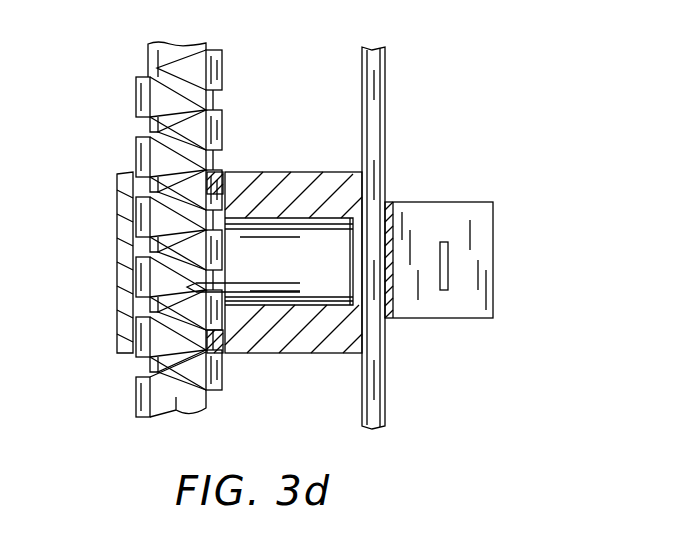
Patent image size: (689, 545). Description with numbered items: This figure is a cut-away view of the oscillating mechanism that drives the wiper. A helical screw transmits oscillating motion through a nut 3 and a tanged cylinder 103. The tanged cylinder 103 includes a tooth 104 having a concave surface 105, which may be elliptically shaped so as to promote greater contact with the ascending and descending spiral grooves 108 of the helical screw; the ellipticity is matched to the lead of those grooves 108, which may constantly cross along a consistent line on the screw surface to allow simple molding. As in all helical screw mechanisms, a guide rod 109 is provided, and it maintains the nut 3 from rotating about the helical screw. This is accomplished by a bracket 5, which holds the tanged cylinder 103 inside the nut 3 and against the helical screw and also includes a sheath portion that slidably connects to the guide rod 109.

The nut 3 is at (332, 172).
The bracket 5 is at (483, 202).
The tanged cylinder 103 is at (293, 307).
The tooth 104 is at (223, 352).
The concave surface 105 is at (228, 268).
The ascending and descending spiral grooves 108 is at (180, 180).
The guide rod 109 is at (386, 134).